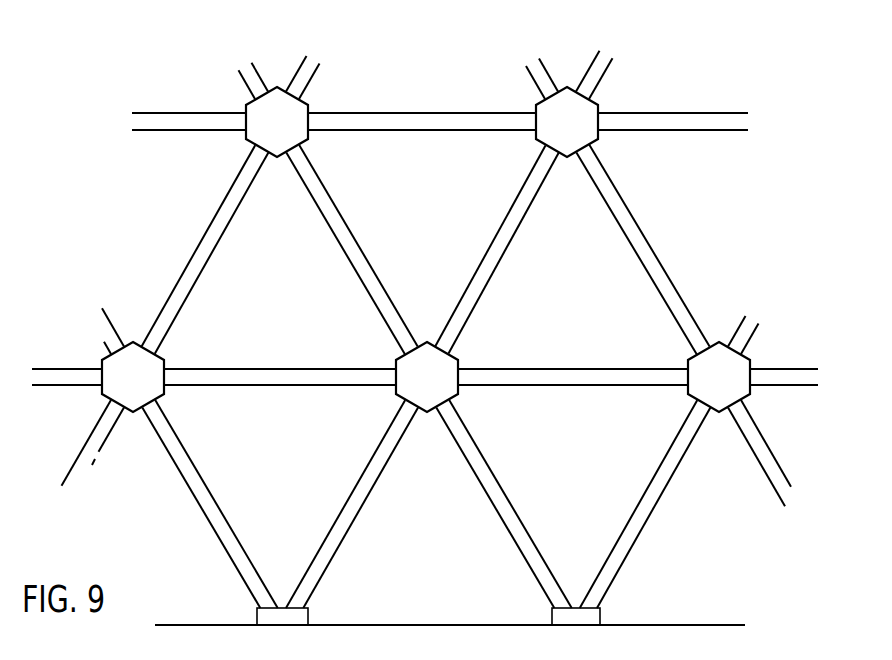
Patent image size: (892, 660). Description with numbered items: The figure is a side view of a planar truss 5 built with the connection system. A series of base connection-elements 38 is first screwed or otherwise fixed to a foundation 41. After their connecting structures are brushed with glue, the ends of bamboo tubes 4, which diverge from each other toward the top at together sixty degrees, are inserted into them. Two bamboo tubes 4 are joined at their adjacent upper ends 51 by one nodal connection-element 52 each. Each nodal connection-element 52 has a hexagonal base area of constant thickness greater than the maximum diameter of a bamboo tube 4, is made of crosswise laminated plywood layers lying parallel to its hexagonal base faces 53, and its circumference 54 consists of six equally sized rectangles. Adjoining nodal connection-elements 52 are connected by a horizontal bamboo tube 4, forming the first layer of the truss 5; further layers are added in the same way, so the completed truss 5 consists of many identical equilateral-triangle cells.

The bamboo tube 4 is at (250, 373).
The truss 5 is at (660, 258).
The connection-element 38 is at (298, 618).
The foundation 41 is at (464, 625).
The upper ends 51 is at (458, 440).
The nodal connection-element 52 is at (445, 365).
The hexagonal base faces 53 is at (153, 365).
The circumference 54 is at (700, 367).